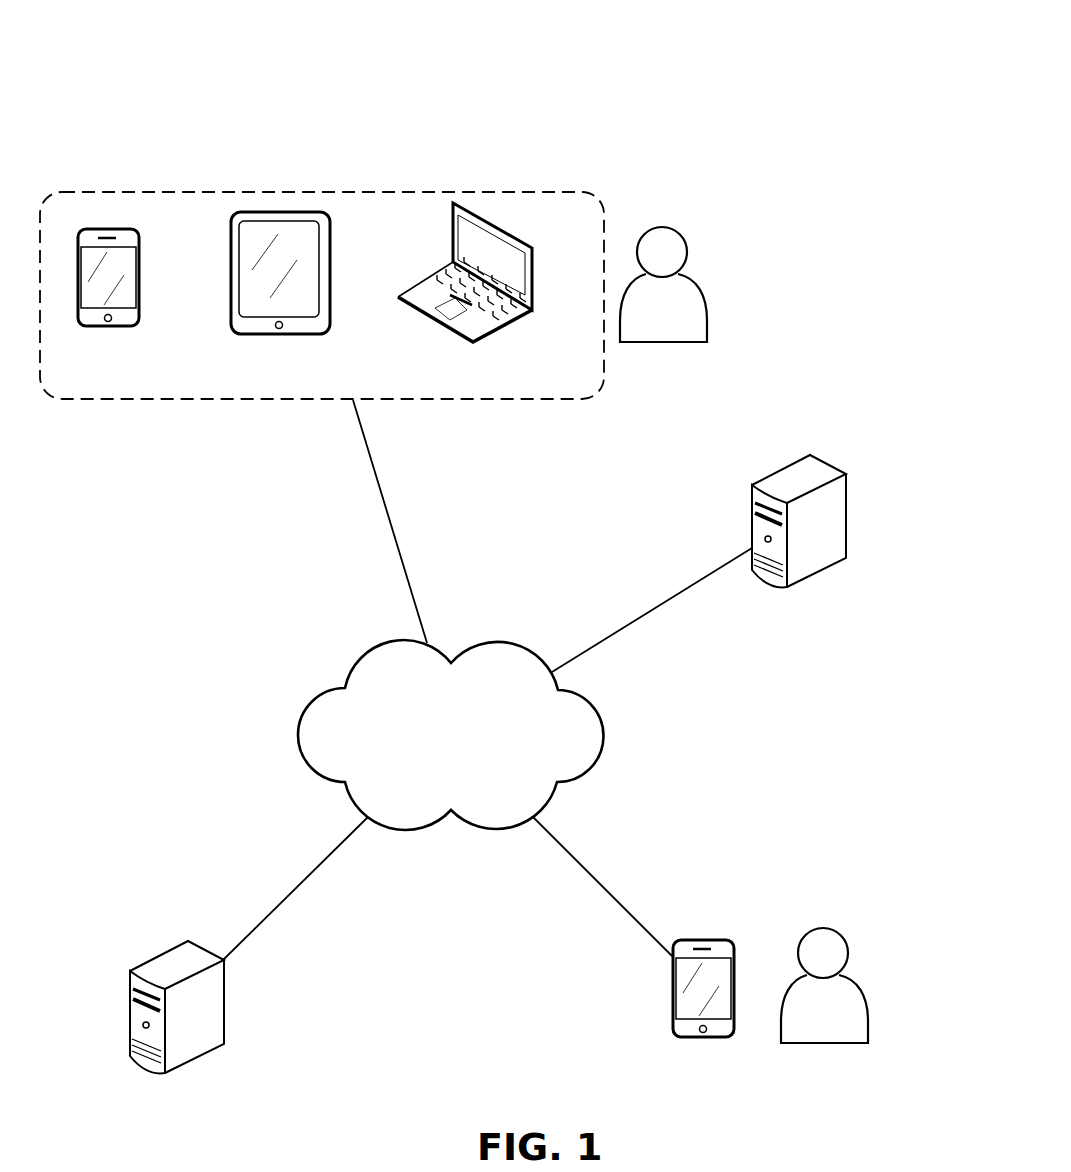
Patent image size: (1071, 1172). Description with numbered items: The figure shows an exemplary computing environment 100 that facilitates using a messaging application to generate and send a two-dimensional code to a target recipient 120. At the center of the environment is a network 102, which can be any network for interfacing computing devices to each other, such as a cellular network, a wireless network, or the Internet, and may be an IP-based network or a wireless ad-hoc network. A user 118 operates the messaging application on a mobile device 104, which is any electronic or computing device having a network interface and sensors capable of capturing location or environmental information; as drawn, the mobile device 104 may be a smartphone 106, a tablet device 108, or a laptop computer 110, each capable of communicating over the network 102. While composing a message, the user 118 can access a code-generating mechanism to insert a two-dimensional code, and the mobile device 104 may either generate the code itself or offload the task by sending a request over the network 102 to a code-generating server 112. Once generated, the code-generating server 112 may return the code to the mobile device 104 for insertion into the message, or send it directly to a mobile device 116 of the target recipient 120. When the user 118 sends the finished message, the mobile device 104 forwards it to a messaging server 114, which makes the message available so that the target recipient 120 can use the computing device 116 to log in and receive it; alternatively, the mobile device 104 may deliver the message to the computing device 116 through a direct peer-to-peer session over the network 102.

The computing environment 100 is at (799, 96).
The network 102 is at (467, 758).
The mobile device 104 is at (165, 190).
The smartphone 106 is at (140, 320).
The tablet device 108 is at (330, 335).
The laptop computer 110 is at (517, 317).
The code-generating server 112 is at (862, 435).
The messaging server 114 is at (168, 950).
The mobile device of target recipient 116 is at (717, 936).
The user 118 is at (682, 237).
The target recipient 120 is at (845, 935).